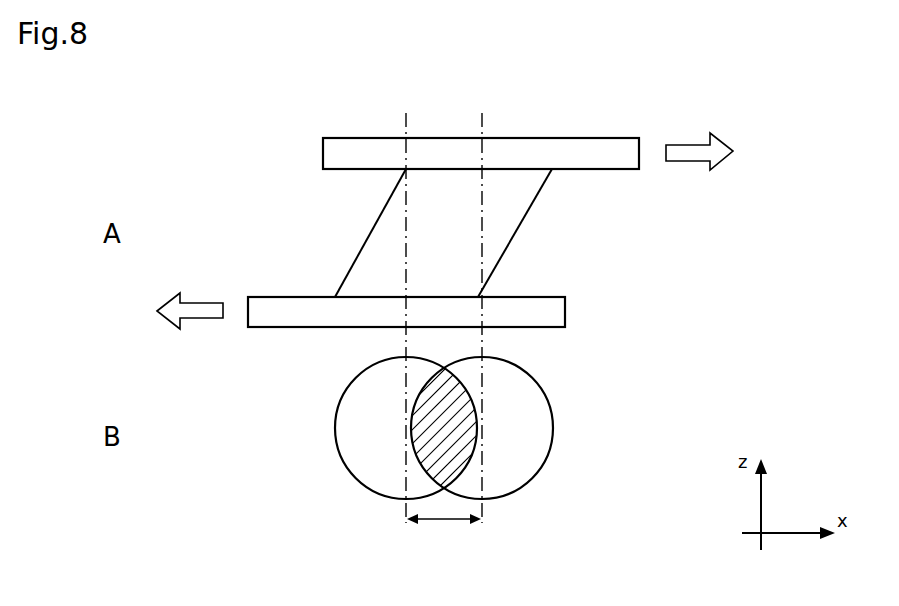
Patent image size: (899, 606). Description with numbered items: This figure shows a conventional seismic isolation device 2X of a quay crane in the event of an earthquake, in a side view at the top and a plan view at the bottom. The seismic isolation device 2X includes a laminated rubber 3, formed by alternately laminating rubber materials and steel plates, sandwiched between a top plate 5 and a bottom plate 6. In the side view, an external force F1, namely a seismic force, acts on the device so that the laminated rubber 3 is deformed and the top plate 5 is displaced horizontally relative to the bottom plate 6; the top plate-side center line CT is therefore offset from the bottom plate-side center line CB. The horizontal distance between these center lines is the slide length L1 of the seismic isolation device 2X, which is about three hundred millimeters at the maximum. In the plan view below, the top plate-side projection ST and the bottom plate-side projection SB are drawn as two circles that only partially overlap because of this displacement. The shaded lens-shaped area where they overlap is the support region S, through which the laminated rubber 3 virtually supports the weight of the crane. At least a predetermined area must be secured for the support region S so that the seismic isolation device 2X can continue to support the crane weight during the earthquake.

The seismic isolation device 2X is at (212, 143).
The top plate 5 is at (331, 156).
The bottom plate 6 is at (263, 306).
The laminated rubber 3 is at (368, 256).
The bottom plate-side center line CB is at (407, 306).
The top plate-side center line CT is at (485, 306).
The external force F1 is at (693, 156).
The bottom plate-side projection SB is at (347, 437).
The top plate-side projection ST is at (549, 437).
The support region S is at (453, 403).
The slide length L1 is at (444, 539).